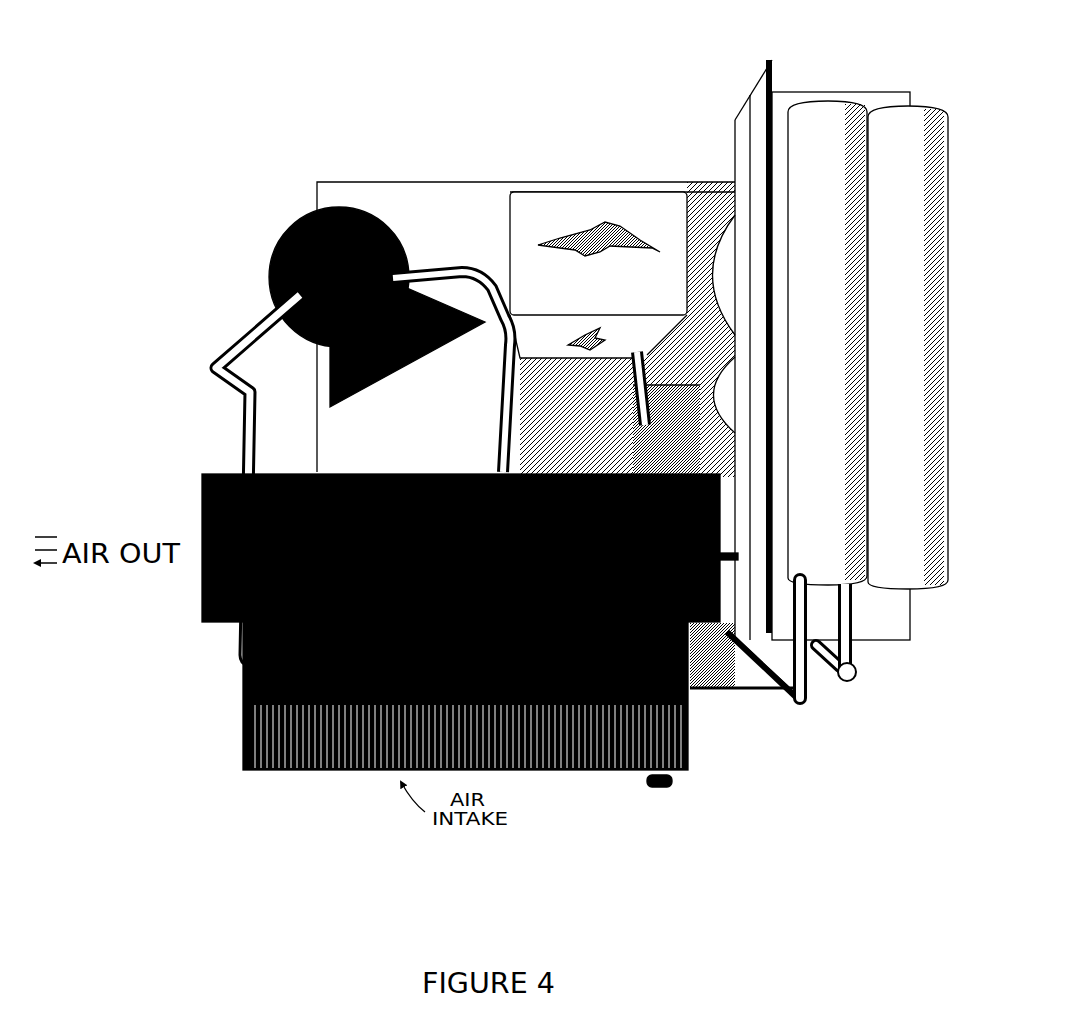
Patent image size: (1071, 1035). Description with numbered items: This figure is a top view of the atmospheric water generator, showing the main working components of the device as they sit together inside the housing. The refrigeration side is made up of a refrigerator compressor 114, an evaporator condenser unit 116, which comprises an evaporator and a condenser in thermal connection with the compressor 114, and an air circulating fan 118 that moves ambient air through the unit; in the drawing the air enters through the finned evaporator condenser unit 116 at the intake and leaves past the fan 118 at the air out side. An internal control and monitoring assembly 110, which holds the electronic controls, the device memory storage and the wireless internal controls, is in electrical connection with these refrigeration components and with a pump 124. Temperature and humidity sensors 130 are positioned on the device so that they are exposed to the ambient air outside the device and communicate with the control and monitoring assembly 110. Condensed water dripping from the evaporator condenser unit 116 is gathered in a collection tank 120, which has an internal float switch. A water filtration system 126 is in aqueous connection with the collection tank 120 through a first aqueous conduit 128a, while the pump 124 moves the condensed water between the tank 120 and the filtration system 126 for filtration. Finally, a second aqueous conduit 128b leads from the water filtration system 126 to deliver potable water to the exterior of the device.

The internal control and monitoring assembly 110 is at (635, 208).
The refrigerator compressor 114 is at (252, 287).
The evaporator condenser unit 116 is at (249, 782).
The air circulating fan 118 is at (184, 512).
The collection tank 120 is at (725, 696).
The pump 124 is at (624, 386).
The water filtration system 126 is at (908, 138).
The first aqueous conduit 128a is at (798, 708).
The second aqueous conduit 128b is at (882, 697).
The temperature and humidity sensors 130 is at (662, 793).